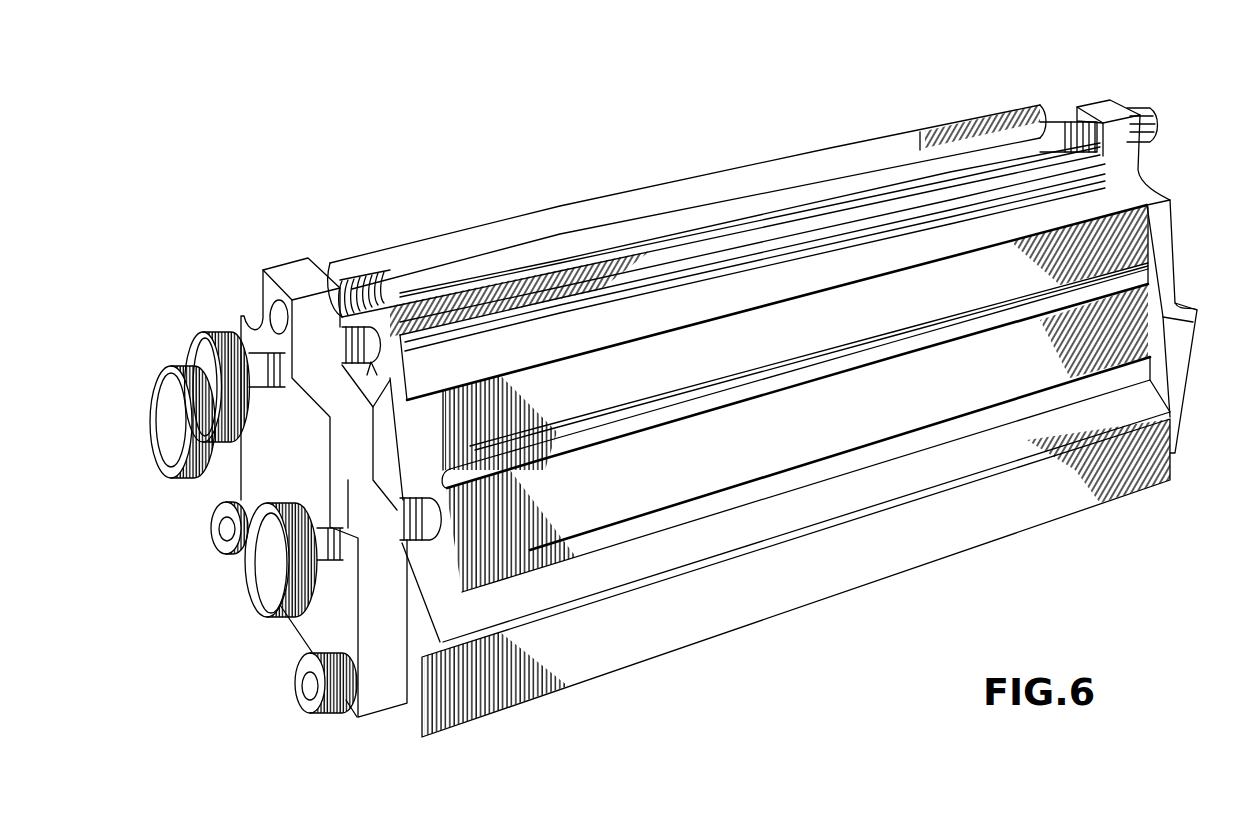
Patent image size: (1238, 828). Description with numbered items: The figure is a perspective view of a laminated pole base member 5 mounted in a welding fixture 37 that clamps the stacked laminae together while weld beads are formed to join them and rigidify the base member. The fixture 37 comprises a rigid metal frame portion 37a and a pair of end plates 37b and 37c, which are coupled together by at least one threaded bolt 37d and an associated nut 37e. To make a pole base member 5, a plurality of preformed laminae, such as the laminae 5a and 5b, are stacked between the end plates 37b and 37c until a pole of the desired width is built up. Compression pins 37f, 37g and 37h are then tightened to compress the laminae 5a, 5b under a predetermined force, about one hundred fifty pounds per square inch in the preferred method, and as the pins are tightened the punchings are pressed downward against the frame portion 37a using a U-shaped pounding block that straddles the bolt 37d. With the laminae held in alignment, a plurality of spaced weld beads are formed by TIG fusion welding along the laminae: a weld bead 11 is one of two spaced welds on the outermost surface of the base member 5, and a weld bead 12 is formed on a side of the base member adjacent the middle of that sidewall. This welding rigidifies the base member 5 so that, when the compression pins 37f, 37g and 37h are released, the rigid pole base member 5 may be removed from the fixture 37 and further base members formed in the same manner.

The pole base member 5 is at (831, 147).
The lamina 5a is at (947, 123).
The lamina 5b is at (981, 118).
The weld bead 11 is at (807, 247).
The weld bead 12 is at (936, 340).
The fixture 37 is at (284, 234).
The frame portion 37a is at (713, 623).
The end plate 37b is at (282, 262).
The end plate 37c is at (1172, 201).
The threaded bolt 37d is at (1050, 128).
The nut 37e is at (1142, 108).
The compression pin 37f is at (185, 333).
The compression pin 37g is at (153, 390).
The compression pin 37h is at (268, 567).